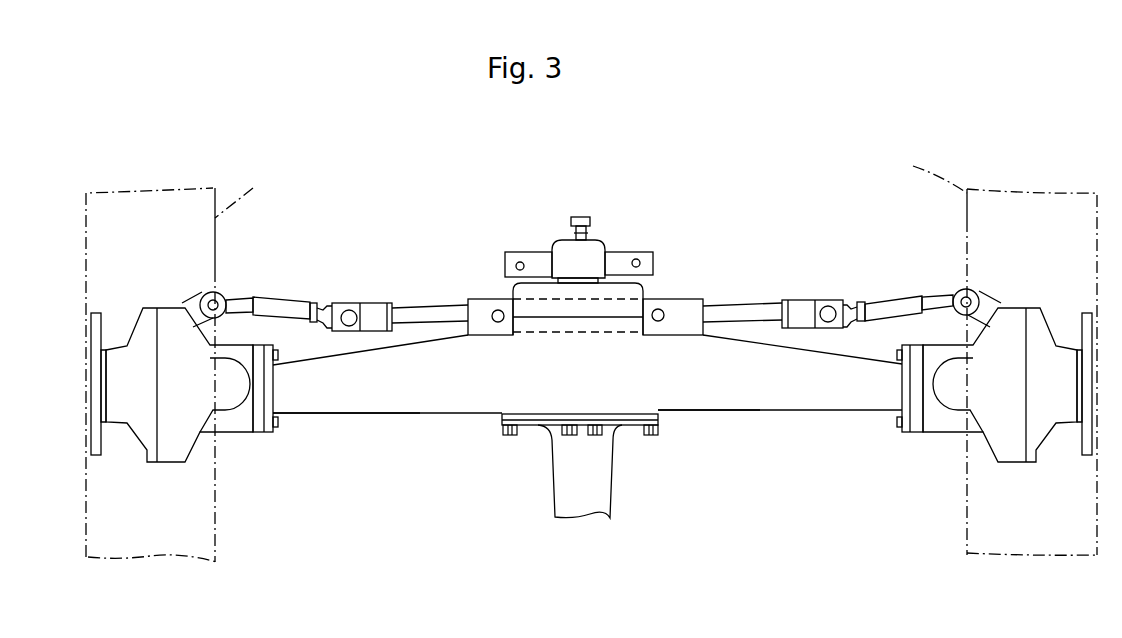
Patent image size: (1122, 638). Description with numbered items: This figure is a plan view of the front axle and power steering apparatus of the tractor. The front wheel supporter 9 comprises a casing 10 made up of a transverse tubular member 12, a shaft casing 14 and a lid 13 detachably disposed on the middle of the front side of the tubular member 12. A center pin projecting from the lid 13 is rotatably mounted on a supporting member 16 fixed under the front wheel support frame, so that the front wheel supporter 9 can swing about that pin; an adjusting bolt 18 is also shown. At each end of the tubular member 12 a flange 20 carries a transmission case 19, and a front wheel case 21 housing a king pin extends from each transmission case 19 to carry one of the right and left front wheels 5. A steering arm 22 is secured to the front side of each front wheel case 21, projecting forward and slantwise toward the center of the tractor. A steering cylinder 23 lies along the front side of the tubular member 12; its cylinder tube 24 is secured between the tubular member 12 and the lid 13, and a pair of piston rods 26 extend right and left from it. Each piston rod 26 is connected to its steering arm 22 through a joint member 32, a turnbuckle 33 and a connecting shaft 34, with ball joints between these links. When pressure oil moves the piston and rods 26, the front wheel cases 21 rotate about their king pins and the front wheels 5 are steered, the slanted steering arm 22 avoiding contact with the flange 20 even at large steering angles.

The front wheels 5 is at (591, 357).
The front wheel supporter 9 is at (692, 418).
The casing 10 is at (448, 415).
The tubular member 12 is at (778, 398).
The lid 13 is at (637, 292).
The shaft casing 14 is at (560, 480).
The supporting member 16 is at (623, 255).
The adjusting bolt 18 is at (587, 218).
The transmission cases 19 is at (242, 422).
The flange 20 is at (283, 421).
The front wheel cases 21 is at (183, 445).
The steering arm 22 is at (190, 307).
The steering cylinder 23 is at (703, 290).
The cylinder tube 24 is at (490, 313).
The piston rods 26 is at (437, 307).
The joint member 32 is at (378, 311).
The turnbuckle 33 is at (288, 305).
The connecting shaft 34 is at (213, 303).